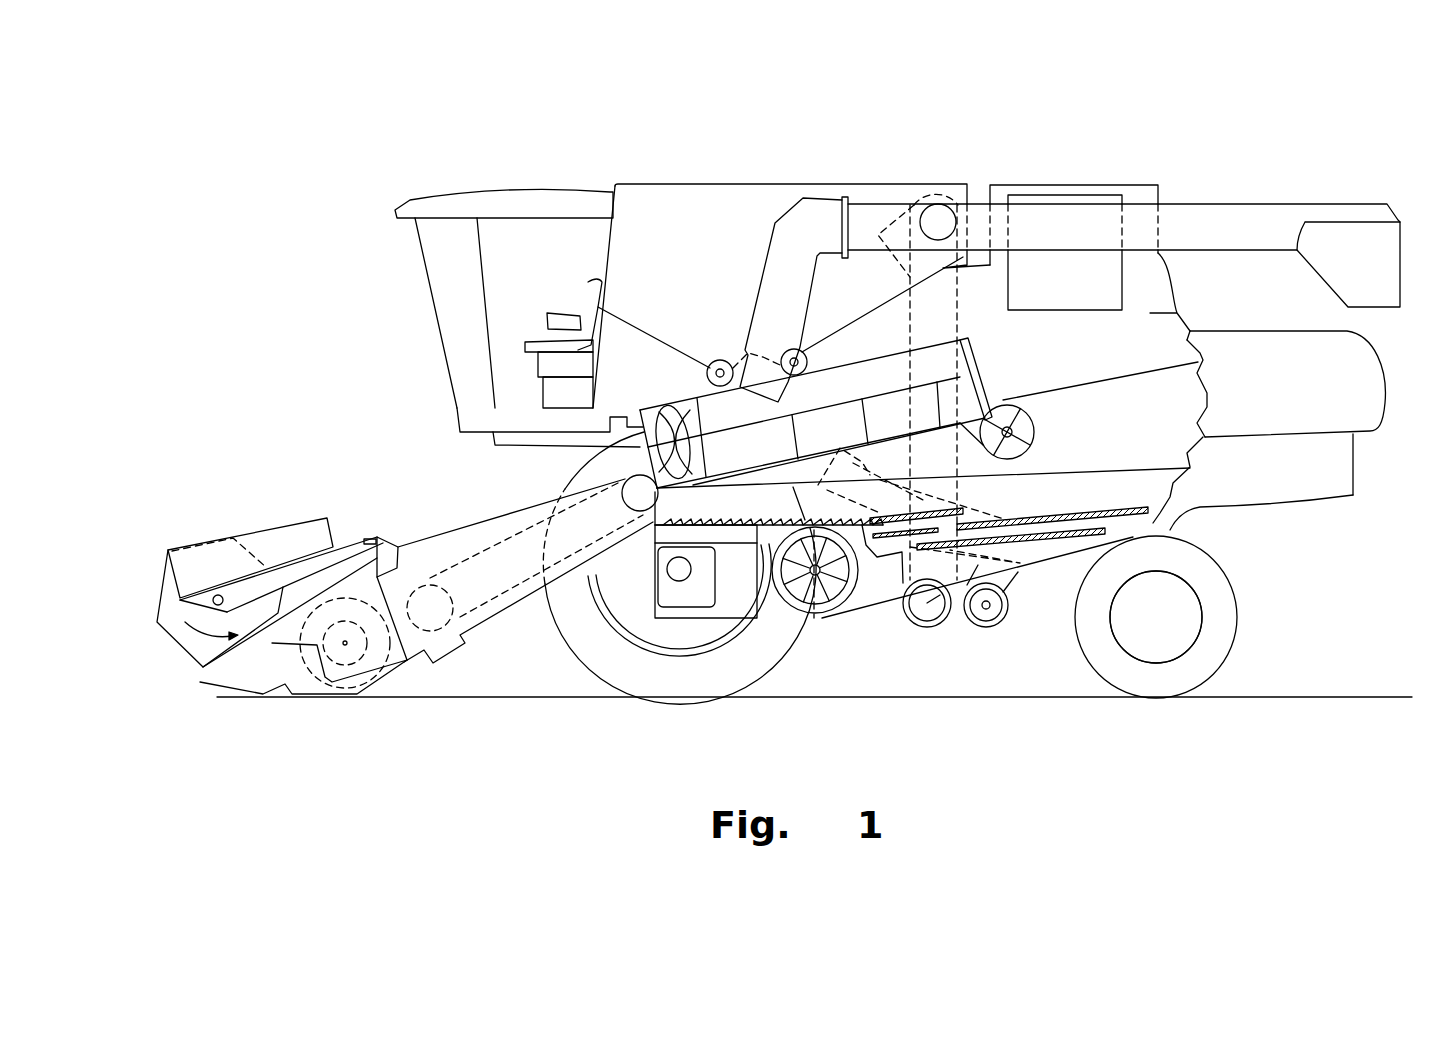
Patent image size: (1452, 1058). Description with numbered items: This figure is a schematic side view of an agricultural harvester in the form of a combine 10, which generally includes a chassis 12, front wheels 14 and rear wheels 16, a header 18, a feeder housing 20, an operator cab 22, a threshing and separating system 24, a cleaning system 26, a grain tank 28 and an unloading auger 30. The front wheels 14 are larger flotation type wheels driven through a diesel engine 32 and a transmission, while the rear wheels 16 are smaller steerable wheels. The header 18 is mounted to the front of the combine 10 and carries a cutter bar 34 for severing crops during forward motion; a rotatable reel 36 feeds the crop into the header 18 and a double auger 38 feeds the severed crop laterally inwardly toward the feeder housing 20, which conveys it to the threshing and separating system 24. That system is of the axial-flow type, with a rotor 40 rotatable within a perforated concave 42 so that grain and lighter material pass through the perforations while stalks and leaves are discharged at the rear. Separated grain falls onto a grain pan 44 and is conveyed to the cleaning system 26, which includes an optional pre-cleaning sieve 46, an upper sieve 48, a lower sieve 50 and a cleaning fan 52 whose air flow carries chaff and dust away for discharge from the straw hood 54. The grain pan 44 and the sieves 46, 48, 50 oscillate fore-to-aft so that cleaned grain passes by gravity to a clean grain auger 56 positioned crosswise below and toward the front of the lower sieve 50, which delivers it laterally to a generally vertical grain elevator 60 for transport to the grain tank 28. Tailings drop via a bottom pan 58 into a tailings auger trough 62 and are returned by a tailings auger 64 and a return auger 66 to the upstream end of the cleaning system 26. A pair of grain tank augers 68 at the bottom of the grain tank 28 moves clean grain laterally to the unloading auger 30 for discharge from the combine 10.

The combine 10 is at (497, 176).
The chassis 12 is at (1177, 533).
The front wheels 14 is at (581, 653).
The rear wheels 16 is at (1232, 637).
The header 18 is at (270, 524).
The feeder housing 20 is at (470, 525).
The operator cab 22 is at (430, 290).
The threshing and separating system 24 is at (578, 458).
The cleaning system 26 is at (880, 623).
The grain tank 28 is at (670, 188).
The unloading auger 30 is at (1252, 212).
The diesel engine 32 is at (1057, 196).
The cutter bar 34 is at (266, 697).
The reel 36 is at (160, 587).
The double auger 38 is at (348, 662).
The rotor 40 is at (667, 412).
The concave 42 is at (853, 390).
The grain pan 44 is at (650, 543).
The pre-cleaning sieve 46 is at (964, 512).
The upper sieve 48 is at (1067, 510).
The lower sieve 50 is at (1037, 541).
The cleaning fan 52 is at (818, 614).
The straw hood 54 is at (1365, 373).
The clean grain auger 56 is at (930, 618).
The bottom pan 58 is at (1125, 589).
The grain elevator 60 is at (958, 313).
The tailings auger trough 62 is at (1107, 627).
The tailings auger 64 is at (987, 622).
The return auger 66 is at (898, 490).
The grain tank augers 68 is at (717, 358).